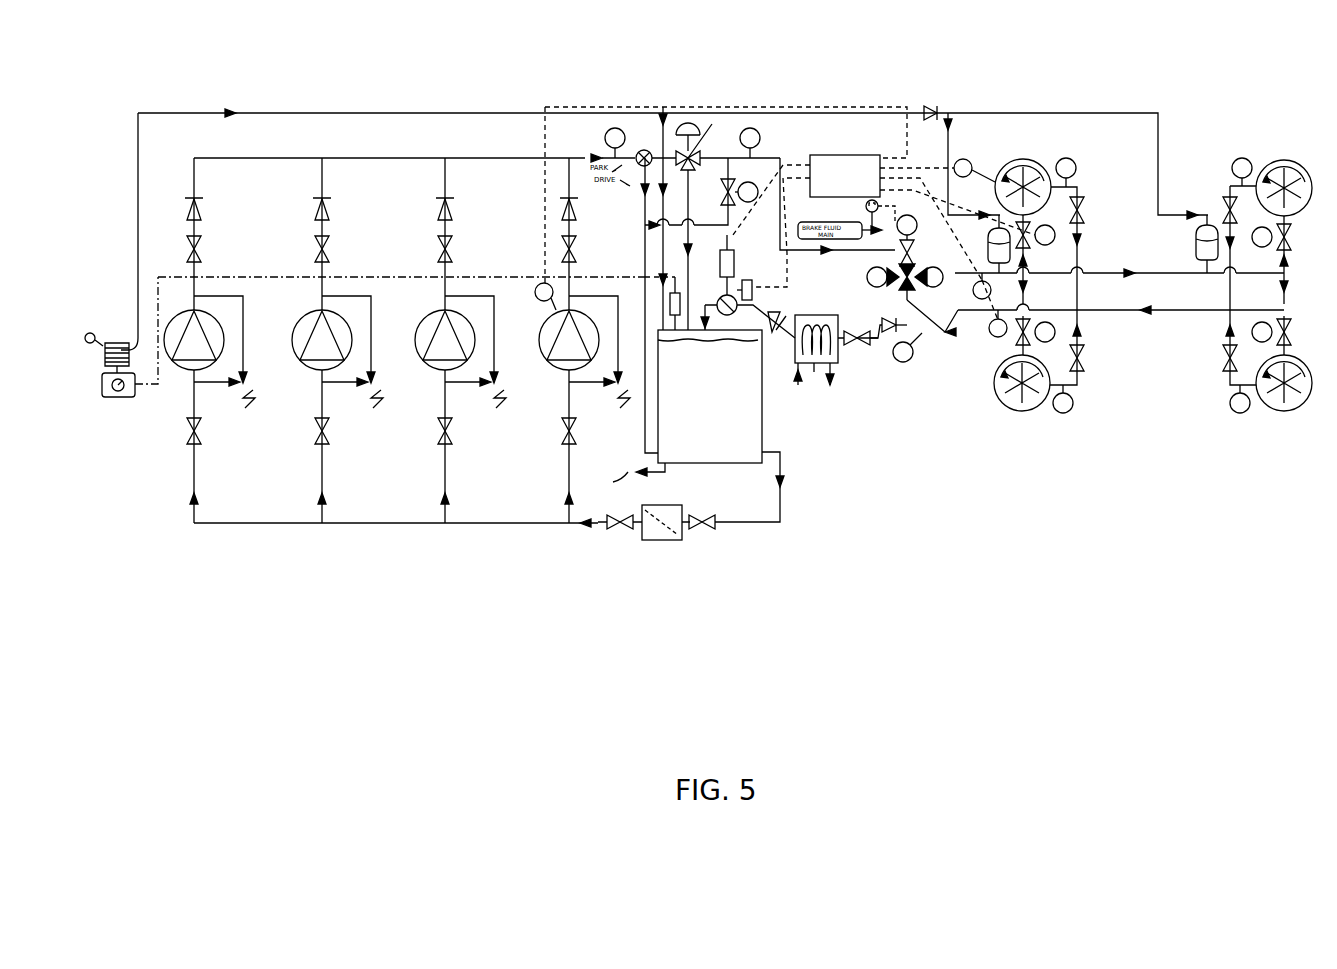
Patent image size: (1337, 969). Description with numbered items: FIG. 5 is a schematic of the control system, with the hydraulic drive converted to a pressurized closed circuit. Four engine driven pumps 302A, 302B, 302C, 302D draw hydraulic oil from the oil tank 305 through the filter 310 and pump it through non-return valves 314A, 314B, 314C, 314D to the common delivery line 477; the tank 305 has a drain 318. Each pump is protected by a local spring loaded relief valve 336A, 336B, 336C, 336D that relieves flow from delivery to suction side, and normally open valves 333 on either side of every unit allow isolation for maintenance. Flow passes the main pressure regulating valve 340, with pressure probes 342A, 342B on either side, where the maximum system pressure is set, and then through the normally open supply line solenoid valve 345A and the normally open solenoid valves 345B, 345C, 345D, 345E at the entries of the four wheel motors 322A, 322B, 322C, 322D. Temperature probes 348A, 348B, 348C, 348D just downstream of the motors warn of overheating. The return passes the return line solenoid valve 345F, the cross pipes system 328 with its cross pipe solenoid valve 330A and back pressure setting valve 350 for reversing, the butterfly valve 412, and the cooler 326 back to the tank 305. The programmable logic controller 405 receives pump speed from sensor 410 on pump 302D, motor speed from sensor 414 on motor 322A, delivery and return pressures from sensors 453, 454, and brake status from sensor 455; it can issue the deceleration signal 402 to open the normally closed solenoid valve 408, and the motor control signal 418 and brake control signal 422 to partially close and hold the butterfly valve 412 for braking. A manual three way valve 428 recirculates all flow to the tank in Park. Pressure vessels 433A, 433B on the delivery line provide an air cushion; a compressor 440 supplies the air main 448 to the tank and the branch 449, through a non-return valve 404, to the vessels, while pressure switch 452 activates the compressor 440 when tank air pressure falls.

The engine driven pump 302A is at (194, 340).
The engine driven pump 302B is at (322, 340).
The engine driven pump 302C is at (445, 340).
The engine driven pump 302D is at (569, 340).
The oil tank 305 is at (710, 396).
The filter 310 is at (664, 535).
The non-return valve 314A is at (199, 210).
The non-return valve 314B is at (327, 210).
The non-return valve 314C is at (450, 210).
The non-return valve 314D is at (574, 210).
The drain 318 is at (645, 476).
The motor 322A is at (1023, 159).
The motor 322B is at (1284, 160).
The motor 322C is at (1288, 411).
The motor 322D is at (1012, 411).
The heat exchanger 326 is at (823, 355).
The cross pipes system 328 is at (912, 290).
The cross pipe solenoid valve 330A is at (867, 278).
The normally open valve 333 is at (186, 436).
The spring loaded relief valve 336A is at (256, 404).
The spring loaded relief valve 336B is at (384, 403).
The spring loaded relief valve 336C is at (507, 404).
The spring loaded relief valve 336D is at (631, 403).
The main pressure regulating valve 340 is at (722, 226).
The pressure probe 342A is at (605, 140).
The pressure probe 342B is at (756, 141).
The supply line solenoid valve 345A is at (893, 240).
The solenoid valve 345B is at (1035, 259).
The solenoid valve 345C is at (1290, 247).
The solenoid valve 345D is at (1298, 339).
The solenoid valve 345E is at (1037, 332).
The return line solenoid valve 345F is at (918, 347).
The temperature probe 348A is at (1072, 153).
The temperature probe 348B is at (1242, 158).
The temperature probe 348C is at (1240, 413).
The temperature probe 348D is at (1068, 412).
The back pressure setting valve 350 is at (876, 318).
The deceleration signal 402 is at (776, 180).
The check valve 404 is at (926, 121).
The programmable logic controller 405 is at (862, 192).
The solenoid valve 408 is at (728, 192).
The pump speed sensor 410 is at (535, 290).
The butterfly valve 412 is at (717, 305).
The motor speed sensor 414 is at (963, 159).
The motor control signal 418 is at (772, 216).
The brake control signal 422 is at (782, 265).
The three way valve 428 is at (644, 150).
The pressure vessel 433A is at (988, 246).
The pressure vessel 433B is at (1196, 245).
The compressor 440 is at (114, 392).
The air main 448 is at (432, 118).
The branch 449 is at (863, 118).
The pressure switch 452 is at (662, 303).
The pressure sensor 453 is at (993, 286).
The pressure sensor 454 is at (990, 335).
The sensor 455 is at (866, 207).
The common delivery line 477 is at (582, 158).